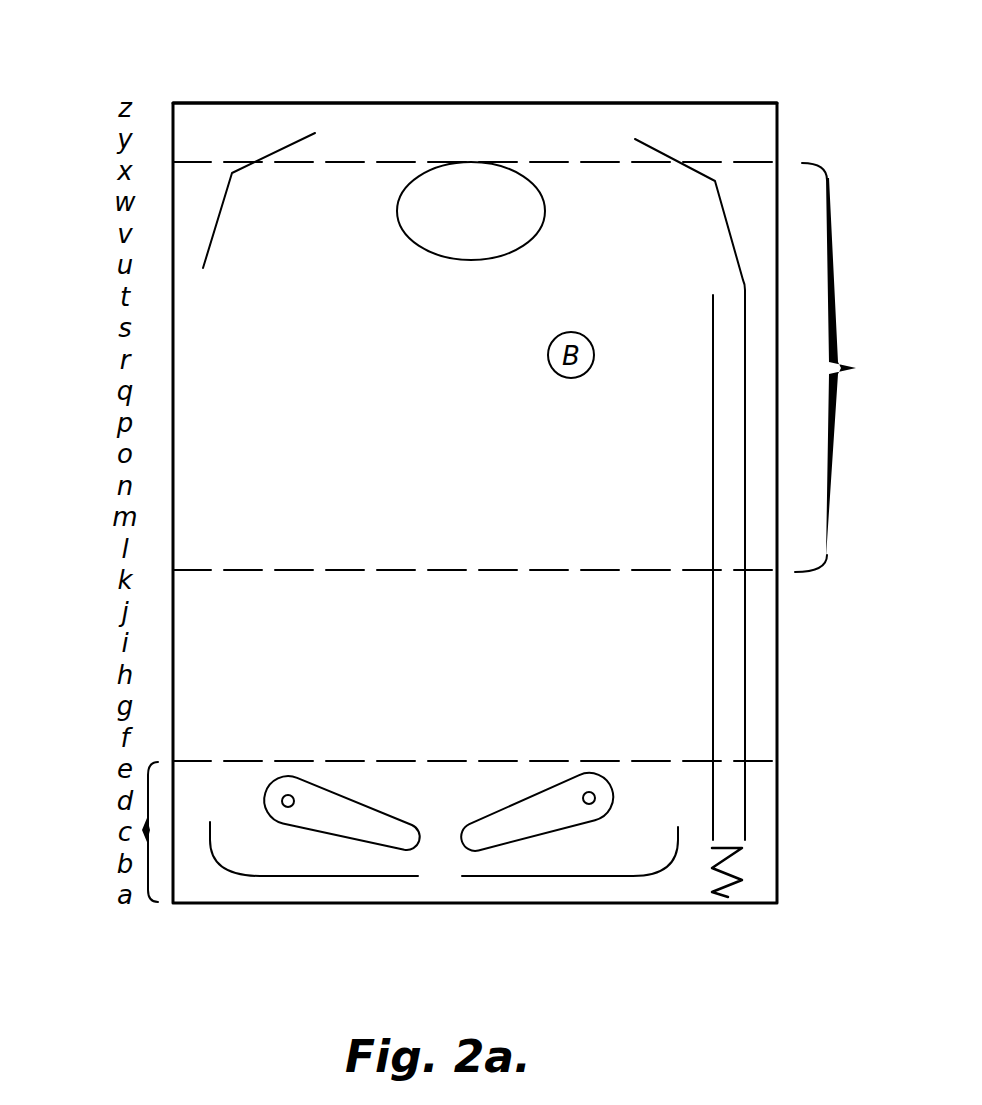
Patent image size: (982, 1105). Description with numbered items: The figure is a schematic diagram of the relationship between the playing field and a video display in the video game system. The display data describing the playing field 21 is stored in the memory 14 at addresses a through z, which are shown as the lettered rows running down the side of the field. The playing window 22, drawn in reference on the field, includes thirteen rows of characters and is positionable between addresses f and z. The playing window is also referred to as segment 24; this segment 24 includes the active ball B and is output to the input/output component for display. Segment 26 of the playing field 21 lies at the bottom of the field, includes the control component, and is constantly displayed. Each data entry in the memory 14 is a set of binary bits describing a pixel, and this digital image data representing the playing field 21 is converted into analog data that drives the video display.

The memory 14 is at (588, 96).
The playing field 21 is at (348, 102).
The playing window 22 is at (217, 160).
The segment 24 is at (858, 367).
The segment 26 is at (143, 830).